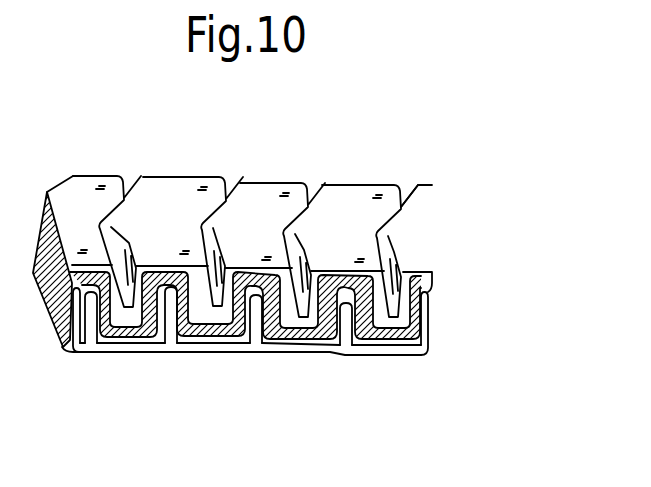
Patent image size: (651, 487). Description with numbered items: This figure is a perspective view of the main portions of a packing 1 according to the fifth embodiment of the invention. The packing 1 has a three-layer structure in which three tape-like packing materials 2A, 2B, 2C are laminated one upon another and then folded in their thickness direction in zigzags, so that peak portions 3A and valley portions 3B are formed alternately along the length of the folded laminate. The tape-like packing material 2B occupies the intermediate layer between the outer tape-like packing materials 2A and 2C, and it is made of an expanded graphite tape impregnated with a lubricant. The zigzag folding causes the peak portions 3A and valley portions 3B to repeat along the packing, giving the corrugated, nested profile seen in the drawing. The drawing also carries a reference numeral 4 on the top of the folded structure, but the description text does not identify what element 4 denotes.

The packing 1 is at (142, 172).
The tape-like packing material 2A is at (299, 333).
The tape-like packing material 2B is at (220, 348).
The tape-like packing material 2C is at (118, 345).
The peak portion 3A is at (357, 187).
The valley portion 3B is at (236, 337).
The top cover sheet 4 is at (279, 182).